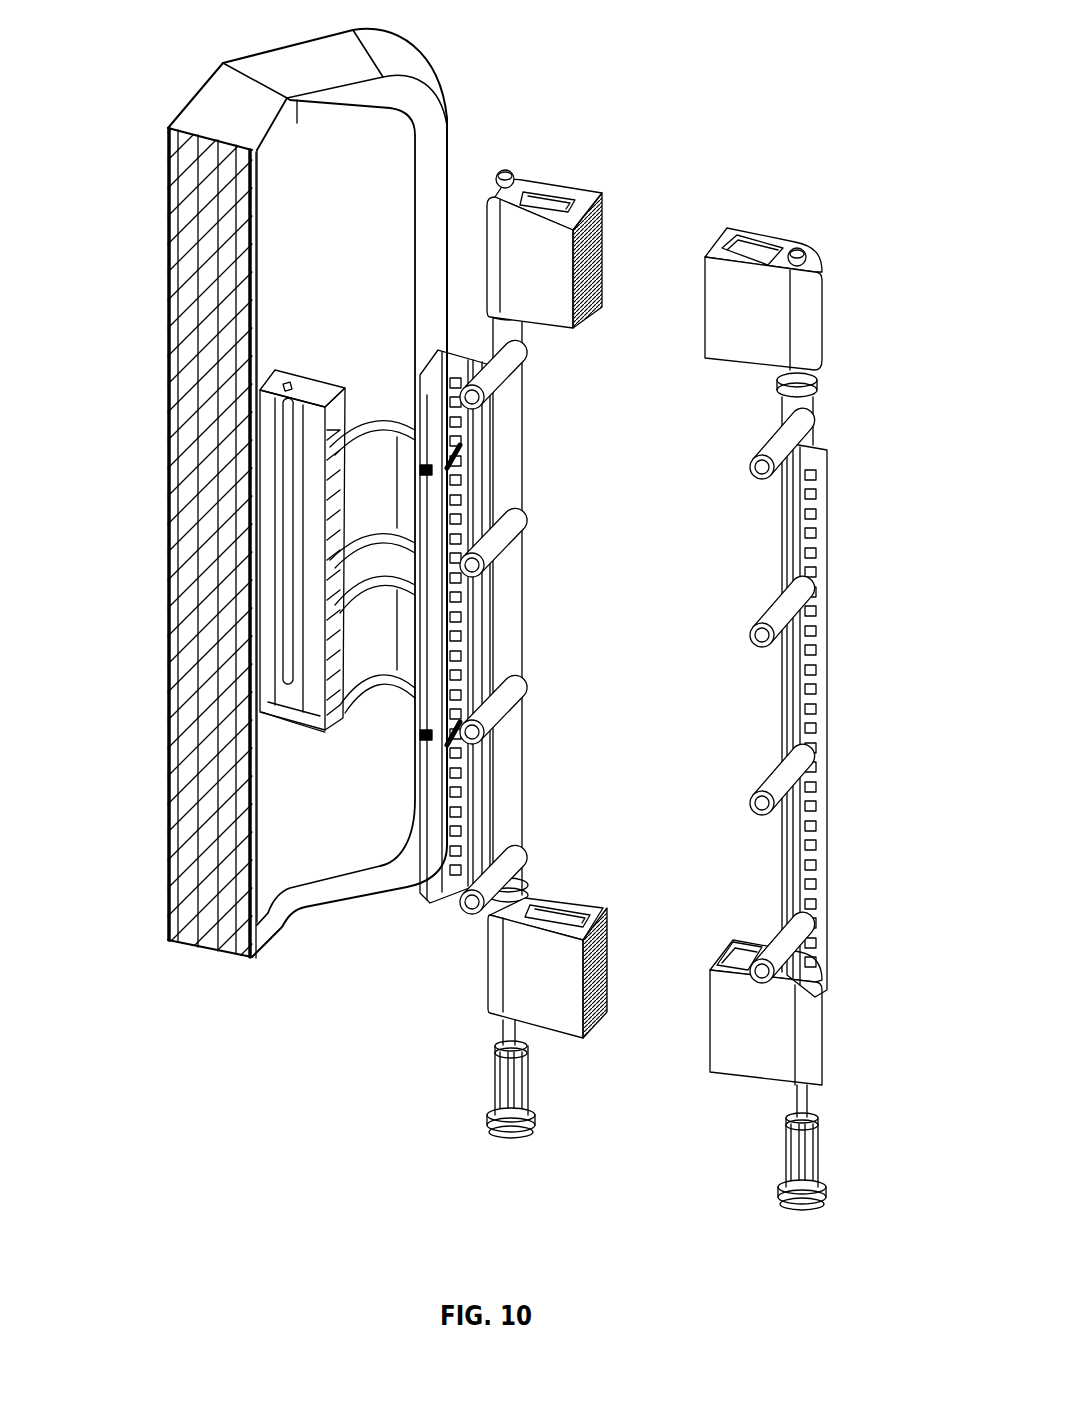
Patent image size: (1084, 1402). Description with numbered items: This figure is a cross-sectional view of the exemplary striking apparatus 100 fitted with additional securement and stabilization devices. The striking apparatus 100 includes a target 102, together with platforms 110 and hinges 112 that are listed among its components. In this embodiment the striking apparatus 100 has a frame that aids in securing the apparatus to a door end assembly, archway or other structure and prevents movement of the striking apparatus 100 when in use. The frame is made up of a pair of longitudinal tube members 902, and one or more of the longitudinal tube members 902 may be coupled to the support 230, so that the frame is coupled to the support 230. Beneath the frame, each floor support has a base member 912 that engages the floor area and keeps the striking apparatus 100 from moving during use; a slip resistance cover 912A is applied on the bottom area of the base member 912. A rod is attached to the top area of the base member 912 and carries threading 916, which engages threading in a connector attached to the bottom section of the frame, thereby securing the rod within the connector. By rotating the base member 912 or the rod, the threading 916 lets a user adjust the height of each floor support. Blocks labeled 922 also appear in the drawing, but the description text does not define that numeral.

The striking apparatus 100 is at (163, 34).
The target 102 is at (170, 462).
The platform 110 is at (333, 383).
The hinge 112 is at (282, 378).
The support 230 is at (383, 675).
The longitudinal tube member 902 is at (513, 435).
The base member 912 is at (495, 1084).
The slip resistance cover 912A is at (513, 1135).
The threading 916 is at (503, 1032).
The hinge block 922 is at (555, 182).